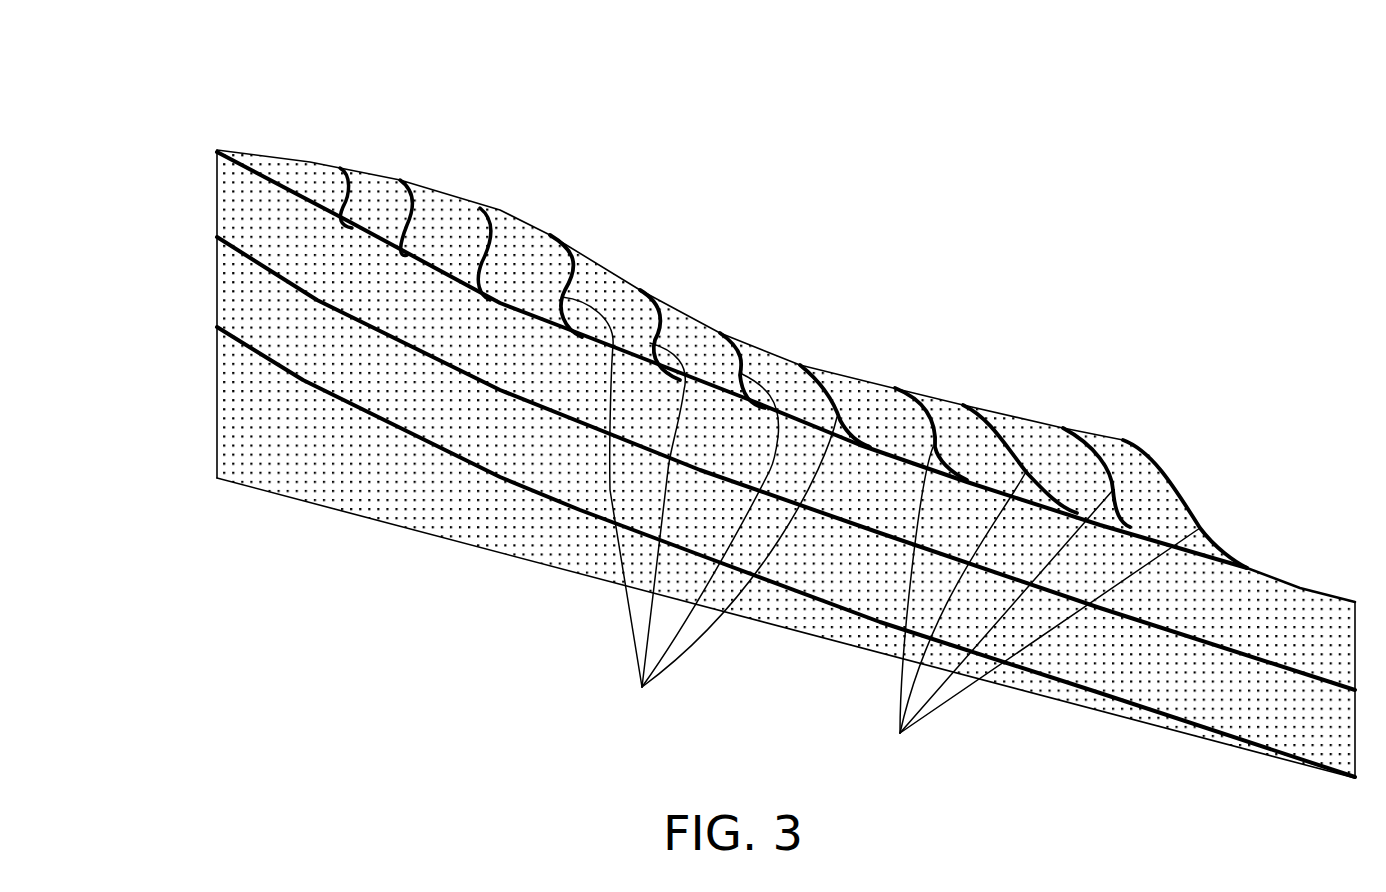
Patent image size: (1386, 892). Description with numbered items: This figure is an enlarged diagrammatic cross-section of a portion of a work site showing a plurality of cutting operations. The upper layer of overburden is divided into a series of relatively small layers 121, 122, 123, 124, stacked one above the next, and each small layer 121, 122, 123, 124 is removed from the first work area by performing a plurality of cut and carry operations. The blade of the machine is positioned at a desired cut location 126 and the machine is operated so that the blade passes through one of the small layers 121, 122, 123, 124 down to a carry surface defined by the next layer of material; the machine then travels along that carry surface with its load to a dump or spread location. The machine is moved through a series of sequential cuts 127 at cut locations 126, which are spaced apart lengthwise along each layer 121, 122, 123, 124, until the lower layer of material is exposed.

The small layer 121 is at (303, 178).
The small layer 122 is at (247, 210).
The small layer 123 is at (243, 302).
The small layer 124 is at (248, 417).
The cut location 126 is at (800, 365).
The sequential cuts 127 is at (881, 534).